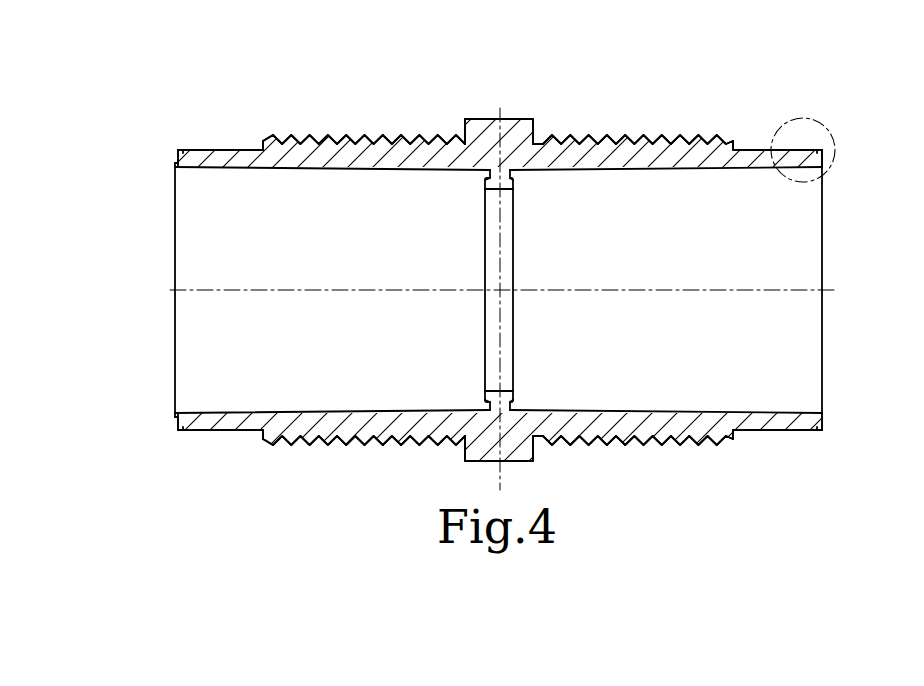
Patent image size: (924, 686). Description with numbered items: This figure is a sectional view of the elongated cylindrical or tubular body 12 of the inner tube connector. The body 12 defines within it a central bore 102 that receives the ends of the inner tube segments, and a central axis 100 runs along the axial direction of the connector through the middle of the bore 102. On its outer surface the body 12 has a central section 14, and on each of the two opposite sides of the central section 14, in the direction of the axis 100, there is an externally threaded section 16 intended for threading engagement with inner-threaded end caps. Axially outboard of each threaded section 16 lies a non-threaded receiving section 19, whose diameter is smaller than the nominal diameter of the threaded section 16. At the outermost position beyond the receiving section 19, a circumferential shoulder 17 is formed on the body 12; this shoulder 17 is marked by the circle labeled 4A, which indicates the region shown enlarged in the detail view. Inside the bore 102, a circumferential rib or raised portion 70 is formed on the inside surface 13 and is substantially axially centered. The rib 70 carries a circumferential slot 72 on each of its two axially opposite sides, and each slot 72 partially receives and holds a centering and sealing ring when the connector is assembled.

The cylindrical body 12 is at (655, 74).
The inside surface 13 is at (720, 169).
The central section 14 is at (513, 118).
The externally threaded section 16 is at (387, 134).
The circumferential shoulder 17 is at (178, 150).
The non-threaded receiving section 19 is at (239, 150).
The detail view of shoulder 4A is at (825, 118).
The circumferential rib 70 is at (511, 184).
The circumferential slot 72 is at (488, 172).
The central axis 100 is at (213, 290).
The central bore 102 is at (246, 394).